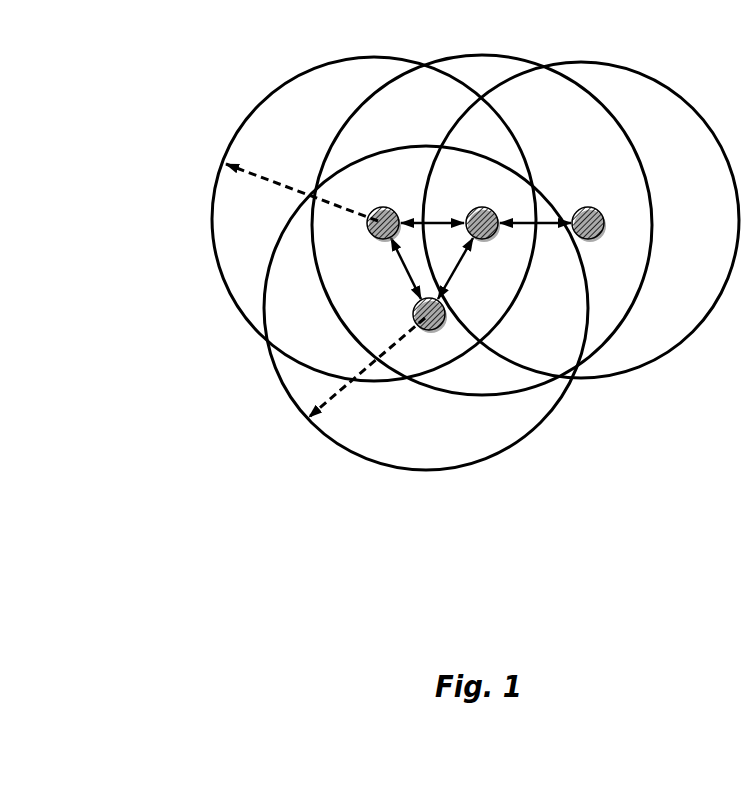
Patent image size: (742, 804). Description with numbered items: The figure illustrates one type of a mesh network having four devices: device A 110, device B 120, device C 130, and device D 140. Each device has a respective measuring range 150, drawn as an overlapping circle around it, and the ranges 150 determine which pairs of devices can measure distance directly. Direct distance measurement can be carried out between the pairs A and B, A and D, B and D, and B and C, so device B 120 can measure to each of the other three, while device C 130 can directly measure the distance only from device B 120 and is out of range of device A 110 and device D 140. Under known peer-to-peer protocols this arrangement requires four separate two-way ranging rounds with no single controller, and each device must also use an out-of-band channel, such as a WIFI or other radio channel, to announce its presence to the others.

The device A 110 is at (370, 212).
The device B 120 is at (502, 205).
The device C 130 is at (592, 240).
The device D 140 is at (441, 331).
The measuring range 150 is at (231, 165).